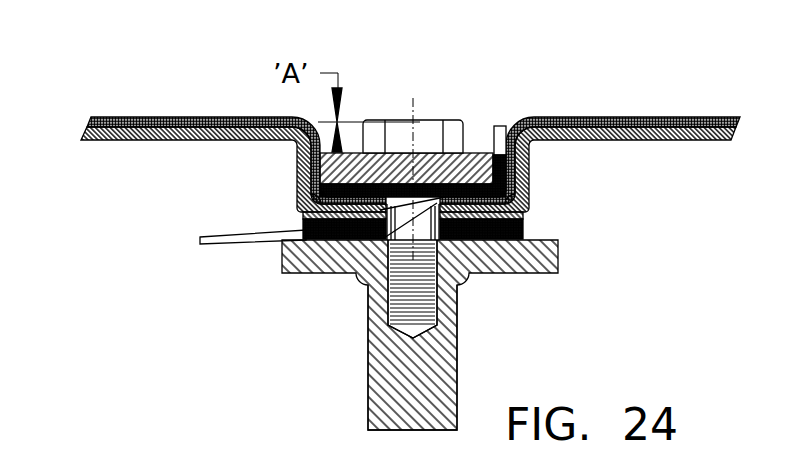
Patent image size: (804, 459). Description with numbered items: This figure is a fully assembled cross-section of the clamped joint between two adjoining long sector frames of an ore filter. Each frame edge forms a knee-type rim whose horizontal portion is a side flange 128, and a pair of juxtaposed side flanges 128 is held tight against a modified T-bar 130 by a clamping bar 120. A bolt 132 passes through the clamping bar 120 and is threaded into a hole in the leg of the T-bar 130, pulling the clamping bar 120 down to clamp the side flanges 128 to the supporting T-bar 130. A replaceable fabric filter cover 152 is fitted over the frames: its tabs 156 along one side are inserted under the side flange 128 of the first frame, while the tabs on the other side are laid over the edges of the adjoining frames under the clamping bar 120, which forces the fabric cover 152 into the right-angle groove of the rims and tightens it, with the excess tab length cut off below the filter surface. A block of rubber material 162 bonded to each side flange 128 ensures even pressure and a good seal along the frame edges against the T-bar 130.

The clamping bar 120 is at (466, 147).
The side flange 128 is at (356, 246).
The modified T-bar 130 is at (368, 367).
The bolt 132 is at (441, 121).
The fabric filter cover 152 is at (136, 118).
The tab 156 is at (215, 245).
The block of rubber material 162 is at (302, 220).